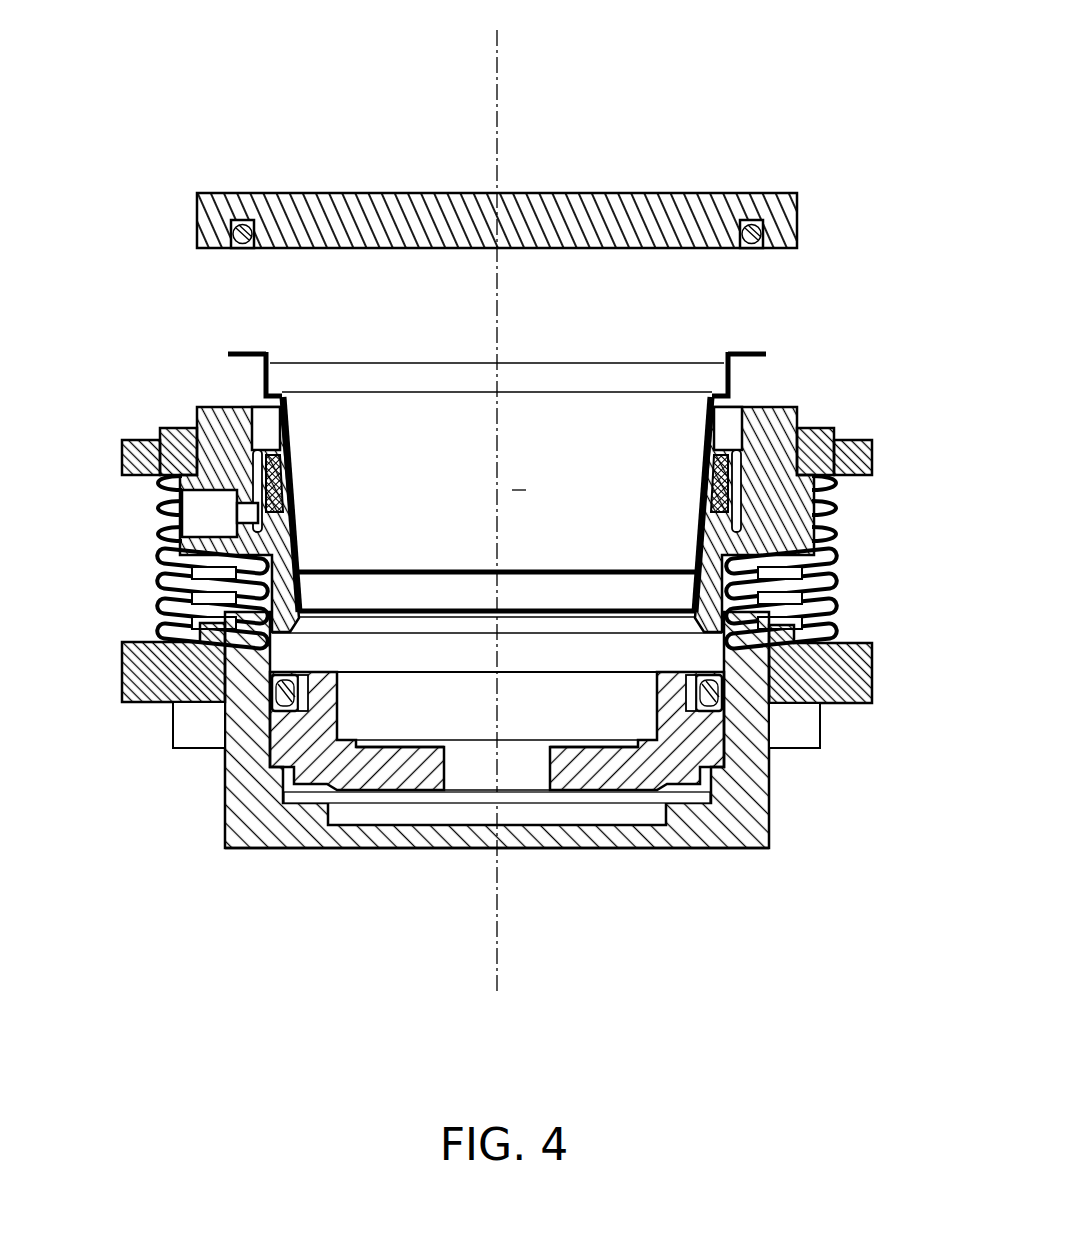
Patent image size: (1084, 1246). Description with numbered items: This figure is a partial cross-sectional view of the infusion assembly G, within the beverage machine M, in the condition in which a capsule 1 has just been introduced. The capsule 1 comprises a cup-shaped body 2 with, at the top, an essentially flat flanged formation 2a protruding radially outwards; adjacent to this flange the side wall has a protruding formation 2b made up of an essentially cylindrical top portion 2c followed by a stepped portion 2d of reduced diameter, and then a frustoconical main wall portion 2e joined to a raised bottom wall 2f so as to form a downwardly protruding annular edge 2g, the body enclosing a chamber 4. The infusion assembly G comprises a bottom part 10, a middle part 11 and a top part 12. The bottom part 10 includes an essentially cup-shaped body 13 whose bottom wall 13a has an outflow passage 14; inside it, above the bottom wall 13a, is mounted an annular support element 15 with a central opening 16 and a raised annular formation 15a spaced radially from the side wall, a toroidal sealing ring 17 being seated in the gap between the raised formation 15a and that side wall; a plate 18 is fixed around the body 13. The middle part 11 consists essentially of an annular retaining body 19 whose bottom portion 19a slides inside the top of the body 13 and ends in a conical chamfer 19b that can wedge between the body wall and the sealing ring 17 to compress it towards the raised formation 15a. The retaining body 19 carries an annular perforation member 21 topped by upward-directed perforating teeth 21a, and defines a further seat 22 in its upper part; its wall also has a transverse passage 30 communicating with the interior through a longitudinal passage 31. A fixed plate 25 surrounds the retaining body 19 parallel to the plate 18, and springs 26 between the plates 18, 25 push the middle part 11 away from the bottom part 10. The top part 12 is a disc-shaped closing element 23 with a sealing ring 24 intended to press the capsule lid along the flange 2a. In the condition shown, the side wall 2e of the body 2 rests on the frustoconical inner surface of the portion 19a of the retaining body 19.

The processing apparatus M is at (725, 138).
The infusion assembly G is at (293, 182).
The capsule 1 is at (516, 454).
The cup-shaped body 2 is at (514, 478).
The flanged formation 2a is at (250, 352).
The protruding formation 2b is at (255, 390).
The cylindrical top portion 2c is at (766, 357).
The stepped portion 2d is at (720, 378).
The frustoconical main wall portion 2e is at (440, 420).
The raised bottom wall 2f is at (447, 570).
The annular edge 2g is at (306, 594).
The chamber 4 is at (519, 479).
The bottom part 10 is at (503, 628).
The middle part 11 is at (155, 523).
The top part 12 is at (470, 183).
The body 13 is at (440, 766).
The bottom wall 13a is at (547, 848).
The outflow passage 14 is at (736, 814).
The support element 15 is at (357, 776).
The raised annular formation 15a is at (518, 706).
The central opening 16 is at (455, 775).
The toroidal sealing ring 17 is at (400, 764).
The plate 18 is at (874, 665).
The annular retaining body 19 is at (503, 472).
The bottom portion 19a is at (662, 590).
The conical chamfer 19b is at (700, 633).
The annular perforation member 21 is at (790, 408).
The perforating teeth 21a is at (714, 452).
The seat 22 is at (278, 425).
The closing element 23 is at (560, 215).
The sealing ring 24 is at (760, 254).
The fixed plate 25 is at (868, 455).
The springs 26 is at (838, 598).
The transverse passage 30 is at (195, 508).
The longitudinal passage 31 is at (160, 452).